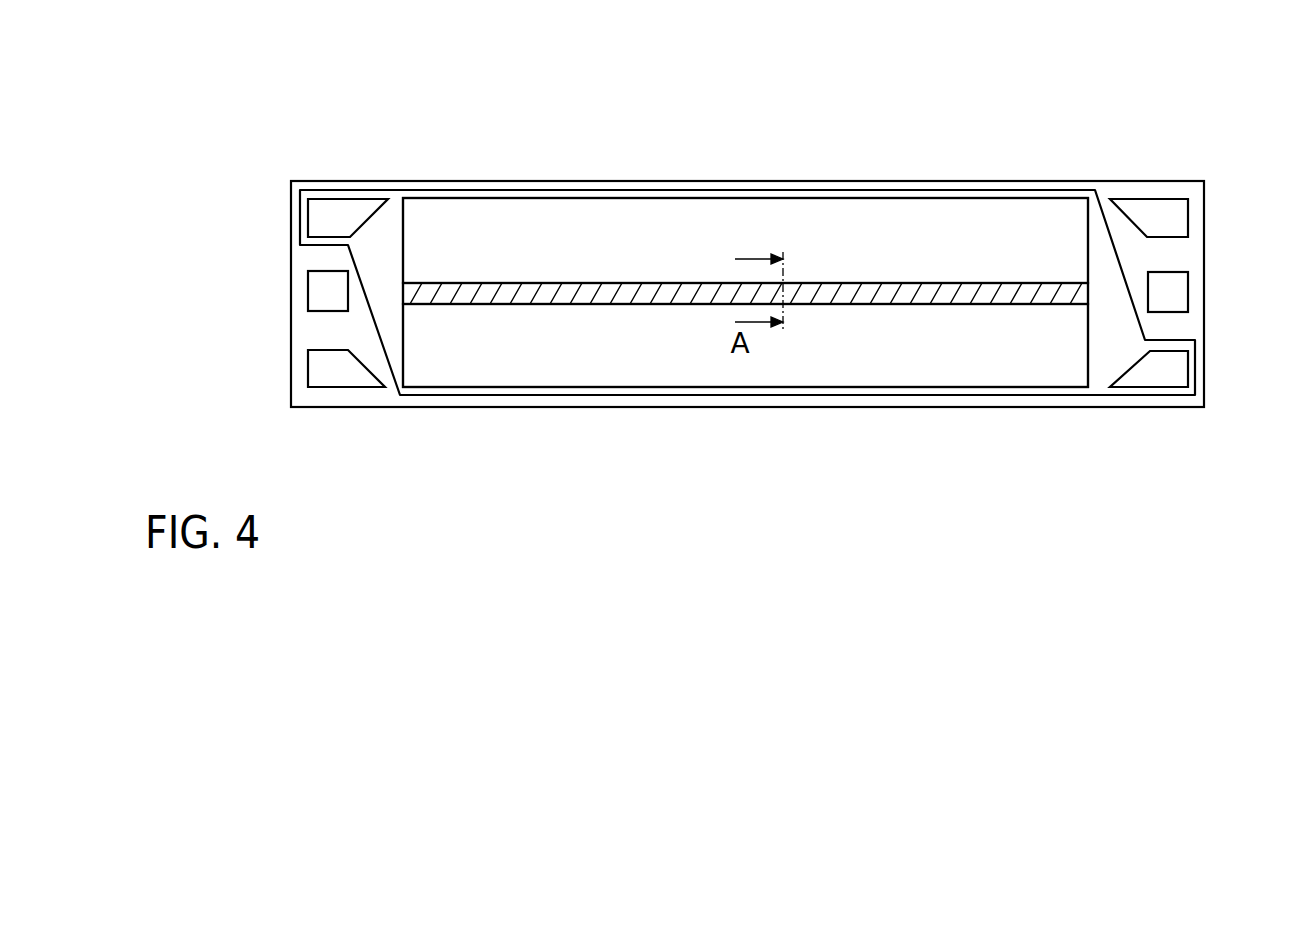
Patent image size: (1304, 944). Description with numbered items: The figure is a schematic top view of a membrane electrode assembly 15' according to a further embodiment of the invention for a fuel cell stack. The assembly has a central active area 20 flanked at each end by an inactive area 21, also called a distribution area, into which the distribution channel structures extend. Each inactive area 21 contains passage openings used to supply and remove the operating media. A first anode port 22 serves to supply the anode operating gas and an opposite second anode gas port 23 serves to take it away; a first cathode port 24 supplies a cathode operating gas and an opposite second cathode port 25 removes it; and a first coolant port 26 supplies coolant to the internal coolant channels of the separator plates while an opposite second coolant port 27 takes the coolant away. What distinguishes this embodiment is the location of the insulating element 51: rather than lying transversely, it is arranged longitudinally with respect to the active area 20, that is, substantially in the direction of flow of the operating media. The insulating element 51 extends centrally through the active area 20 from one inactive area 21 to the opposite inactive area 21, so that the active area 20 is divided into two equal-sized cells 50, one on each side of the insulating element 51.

The membrane electrode assembly 15' is at (782, 222).
The active area 20 is at (405, 165).
The inactive area 21 is at (291, 165).
The first anode port 22 is at (1173, 217).
The second anode gas port 23 is at (324, 377).
The first cathode port 24 is at (1173, 377).
The second cathode port 25 is at (324, 218).
The first coolant port 26 is at (1173, 293).
The second coolant port 27 is at (324, 295).
The cell 50 is at (745, 292).
The insulating element 51 is at (882, 292).